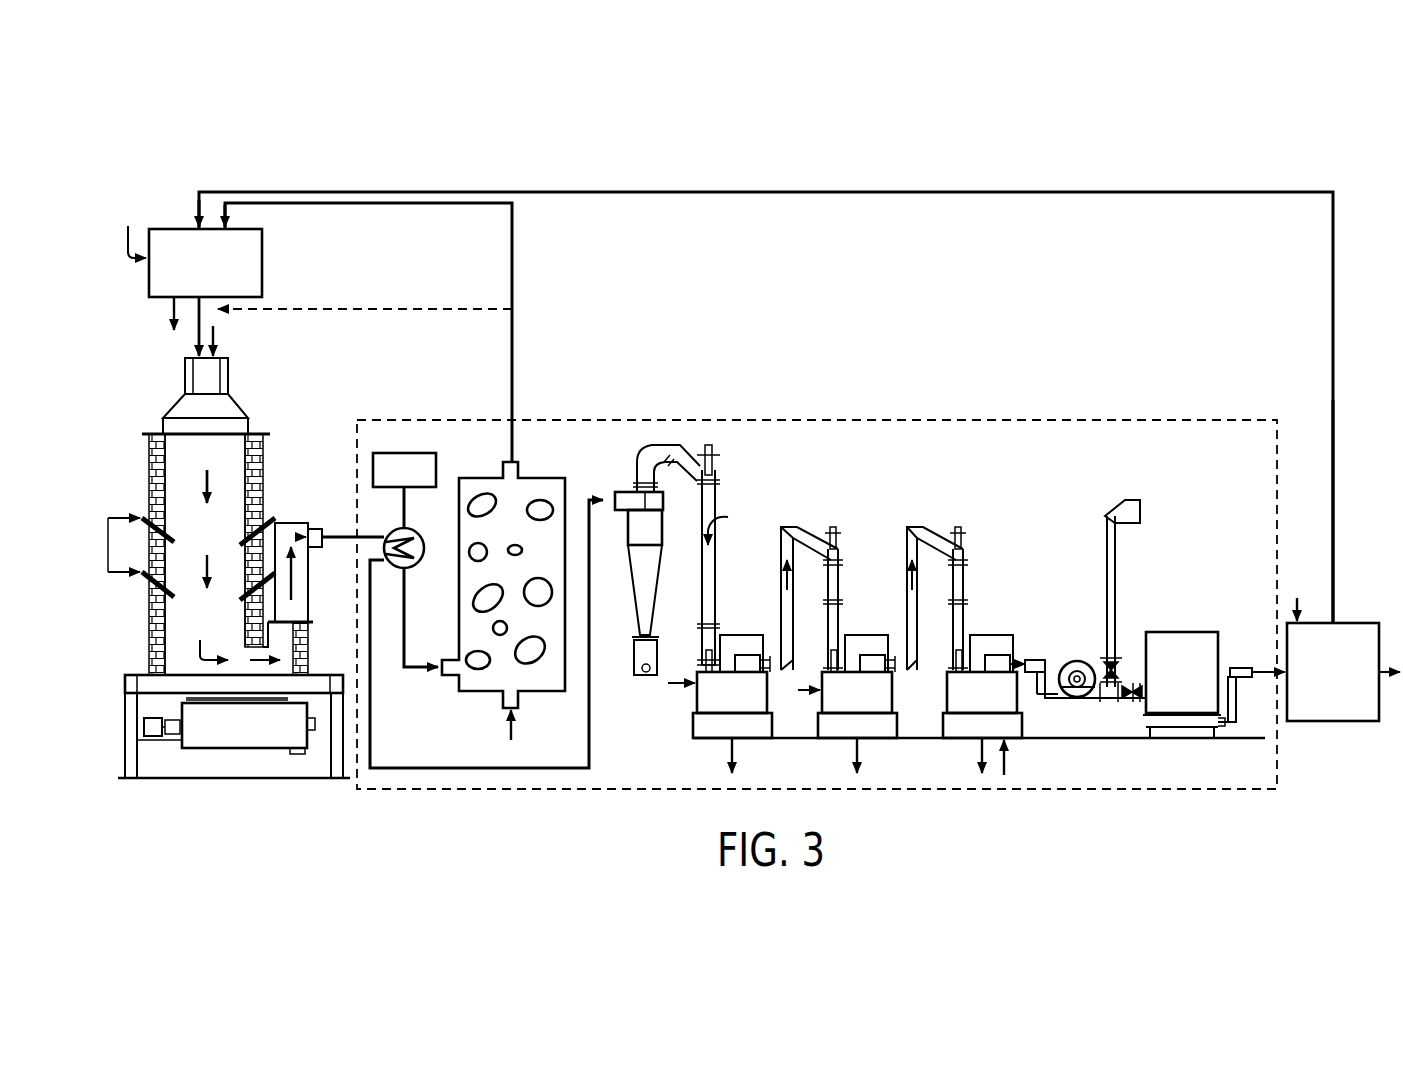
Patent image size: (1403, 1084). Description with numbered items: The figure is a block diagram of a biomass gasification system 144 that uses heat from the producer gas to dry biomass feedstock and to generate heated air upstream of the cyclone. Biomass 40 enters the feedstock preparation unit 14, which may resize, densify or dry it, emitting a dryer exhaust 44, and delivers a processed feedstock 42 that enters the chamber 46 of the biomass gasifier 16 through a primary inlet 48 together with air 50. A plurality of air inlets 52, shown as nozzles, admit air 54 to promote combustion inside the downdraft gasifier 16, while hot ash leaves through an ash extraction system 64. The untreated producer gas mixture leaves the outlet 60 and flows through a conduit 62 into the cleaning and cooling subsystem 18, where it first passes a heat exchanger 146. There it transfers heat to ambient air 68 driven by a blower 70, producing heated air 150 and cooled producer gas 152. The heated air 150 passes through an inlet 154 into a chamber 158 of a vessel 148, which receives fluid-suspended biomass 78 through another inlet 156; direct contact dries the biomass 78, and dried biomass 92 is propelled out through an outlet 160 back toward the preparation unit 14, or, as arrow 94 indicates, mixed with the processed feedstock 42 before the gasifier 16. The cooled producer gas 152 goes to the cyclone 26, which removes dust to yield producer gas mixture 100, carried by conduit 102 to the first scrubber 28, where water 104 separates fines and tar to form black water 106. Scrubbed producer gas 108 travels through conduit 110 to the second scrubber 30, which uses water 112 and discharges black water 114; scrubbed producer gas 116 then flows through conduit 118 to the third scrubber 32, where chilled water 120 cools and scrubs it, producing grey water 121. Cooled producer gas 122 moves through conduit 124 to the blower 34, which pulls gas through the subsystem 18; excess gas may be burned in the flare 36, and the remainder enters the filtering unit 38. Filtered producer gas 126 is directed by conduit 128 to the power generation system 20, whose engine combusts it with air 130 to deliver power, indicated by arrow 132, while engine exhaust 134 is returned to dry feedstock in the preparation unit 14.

The feedstock preparation unit 14 is at (178, 228).
The biomass gasifier 16 is at (229, 584).
The cleaning and cooling subsystem 18 is at (940, 418).
The power generation system 20 is at (1333, 722).
The cyclone 26 is at (662, 518).
The first scrubber 28 is at (767, 690).
The second scrubber 30 is at (892, 690).
The third scrubber 32 is at (1022, 690).
The blower 34 is at (1078, 660).
The flare 36 is at (1140, 512).
The filtering unit 38 is at (1182, 631).
The biomass 40 is at (132, 228).
The processed feedstock 42 is at (196, 335).
The dryer exhaust 44 is at (170, 314).
The chamber 46 is at (176, 452).
The primary inlet 48 is at (231, 376).
The air 50 is at (216, 338).
The air inlets 52 is at (147, 518).
The air 54 is at (128, 545).
The outlet 60 is at (302, 645).
The conduit 62 is at (313, 548).
The ash extraction system 64 is at (206, 750).
The ambient air 68 is at (403, 450).
The blower 70 is at (388, 451).
The biomass 78 is at (505, 575).
The dried biomass 92 is at (514, 341).
The arrow 94 is at (361, 308).
The producer gas mixture 100 is at (738, 555).
The conduit 102 is at (718, 603).
The water 104 is at (668, 668).
The black water 106 is at (730, 752).
The scrubbed producer gas 108 is at (797, 594).
The conduit 110 is at (781, 588).
The water 112 is at (798, 690).
The black water 114 is at (855, 752).
The scrubbed producer gas 116 is at (907, 588).
The conduit 118 is at (907, 538).
The chilled water 120 is at (1006, 764).
The grey water 121 is at (980, 750).
The cooled producer gas 122 is at (1020, 662).
The conduit 124 is at (1033, 660).
The filtered producer gas 126 is at (1256, 677).
The conduit 128 is at (1240, 667).
The air 130 is at (1297, 598).
The arrow 132 is at (1391, 676).
The engine exhaust 134 is at (1335, 402).
The biomass gasification system 144 is at (948, 166).
The heat exchanger 146 is at (425, 549).
The vessel 148 is at (503, 592).
The heated air 150 is at (422, 667).
The cooled producer gas 152 is at (460, 767).
The inlet 154 is at (450, 660).
The inlet 156 is at (520, 697).
The chamber 158 is at (468, 489).
The outlet 160 is at (523, 471).